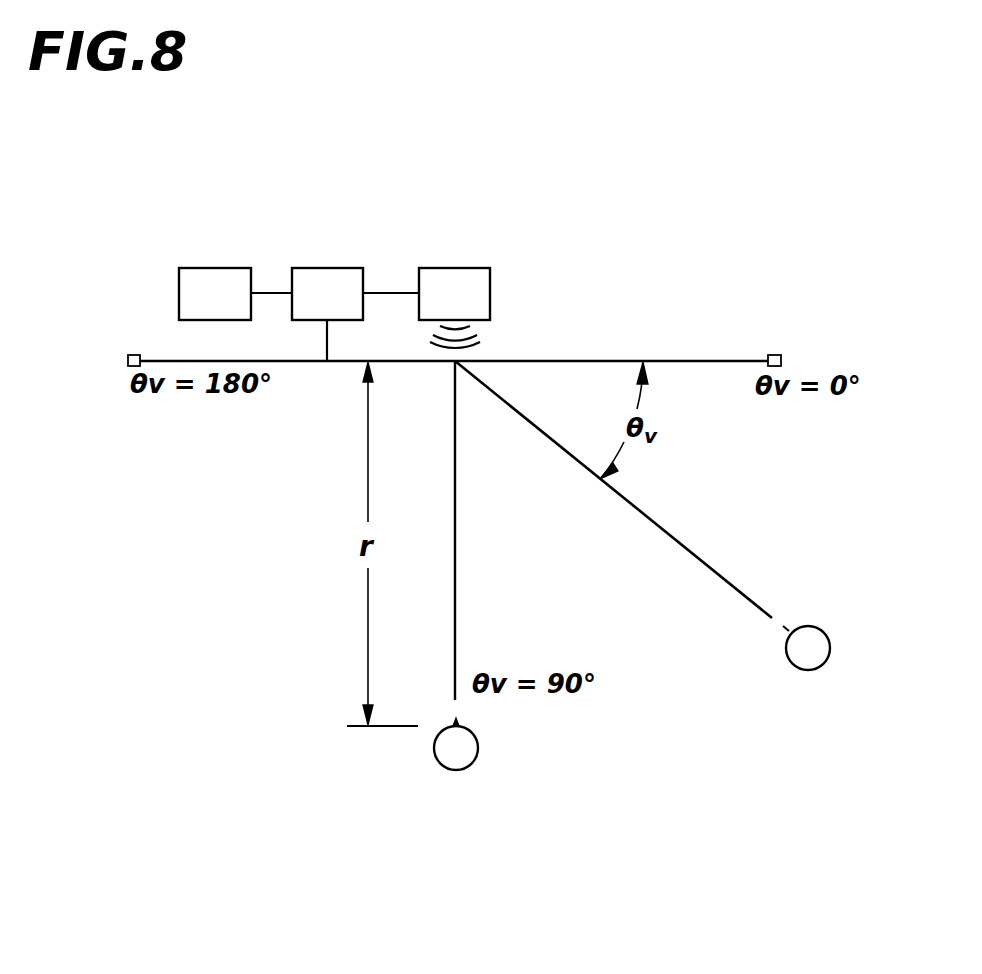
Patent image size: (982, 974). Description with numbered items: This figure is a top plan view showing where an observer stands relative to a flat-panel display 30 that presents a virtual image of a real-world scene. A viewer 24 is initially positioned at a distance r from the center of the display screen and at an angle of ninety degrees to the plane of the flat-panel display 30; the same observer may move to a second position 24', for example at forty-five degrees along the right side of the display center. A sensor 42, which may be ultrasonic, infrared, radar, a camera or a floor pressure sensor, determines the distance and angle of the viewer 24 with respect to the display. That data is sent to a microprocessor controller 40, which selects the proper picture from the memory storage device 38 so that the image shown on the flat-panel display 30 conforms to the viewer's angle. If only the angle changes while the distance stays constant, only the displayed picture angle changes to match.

The viewer 24 is at (466, 787).
The viewer position 24' is at (830, 605).
The flat-panel display 30 is at (570, 360).
The memory storage device 38 is at (215, 294).
The microprocessor controller 40 is at (307, 314).
The sensor 42 is at (426, 308).